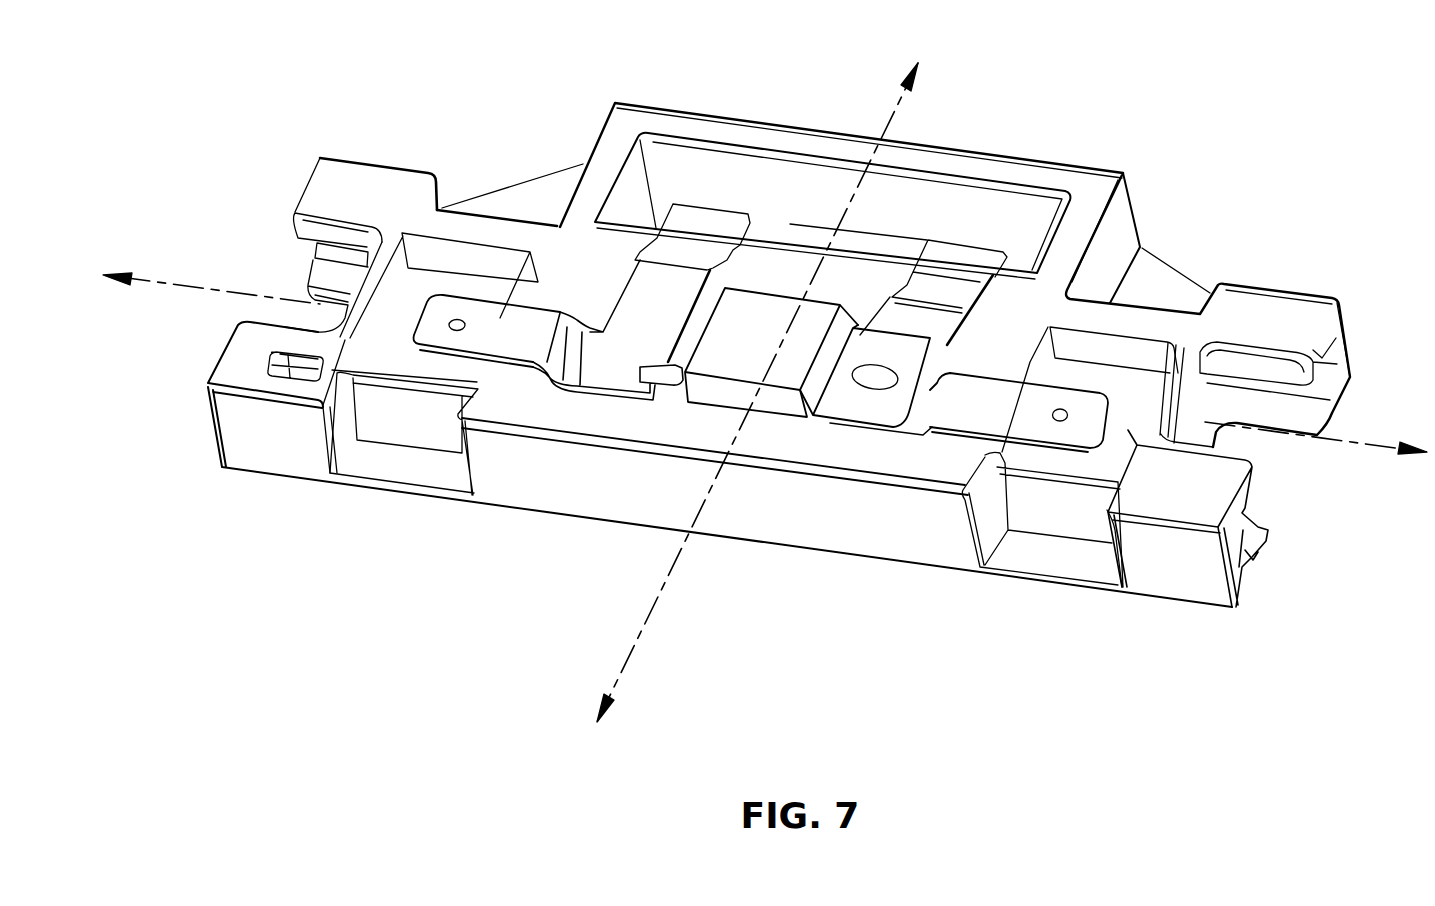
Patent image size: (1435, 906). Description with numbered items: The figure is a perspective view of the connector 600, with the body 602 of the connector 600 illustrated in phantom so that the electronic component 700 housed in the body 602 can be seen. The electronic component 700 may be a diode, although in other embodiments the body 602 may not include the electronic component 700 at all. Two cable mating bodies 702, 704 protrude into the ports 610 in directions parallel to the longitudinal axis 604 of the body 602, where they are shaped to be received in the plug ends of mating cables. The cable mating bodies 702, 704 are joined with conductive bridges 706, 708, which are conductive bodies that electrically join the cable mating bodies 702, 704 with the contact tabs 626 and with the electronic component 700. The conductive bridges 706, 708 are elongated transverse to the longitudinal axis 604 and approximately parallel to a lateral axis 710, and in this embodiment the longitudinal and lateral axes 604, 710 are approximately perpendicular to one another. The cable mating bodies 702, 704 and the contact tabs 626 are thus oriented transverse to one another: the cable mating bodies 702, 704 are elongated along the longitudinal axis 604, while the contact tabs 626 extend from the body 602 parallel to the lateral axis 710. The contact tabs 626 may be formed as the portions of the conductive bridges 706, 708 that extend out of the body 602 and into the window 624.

The connector 600 is at (1147, 313).
The body 602 is at (503, 202).
The longitudinal axis 604 is at (1370, 443).
The ports 610 is at (453, 253).
The window 624 is at (808, 237).
The contact tabs 626 is at (708, 223).
The electronic component 700 is at (777, 400).
The cable mating body 702 is at (449, 333).
The cable mating body 704 is at (1048, 430).
The conductive bridge 706 is at (607, 360).
The conductive bridge 708 is at (913, 420).
The lateral axis 710 is at (622, 670).